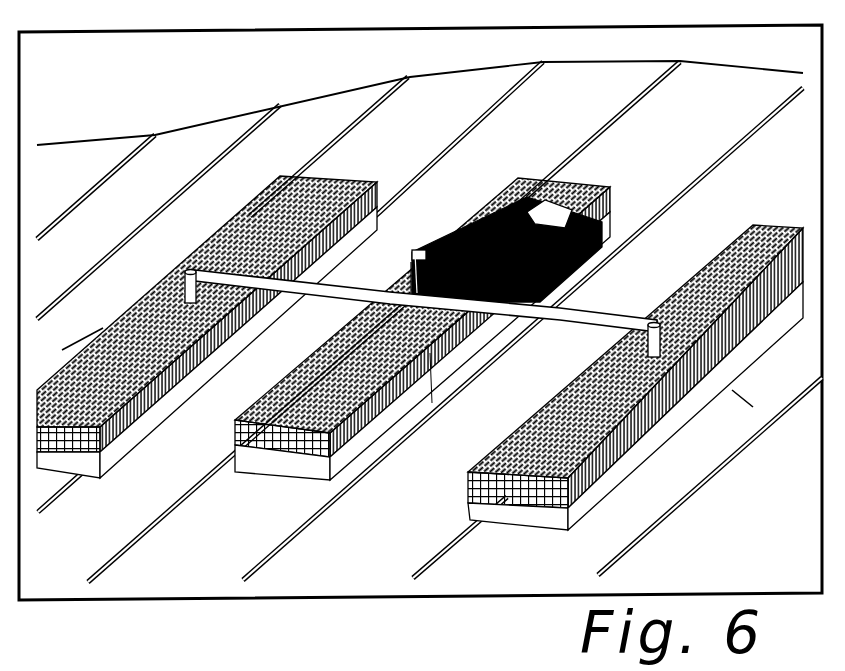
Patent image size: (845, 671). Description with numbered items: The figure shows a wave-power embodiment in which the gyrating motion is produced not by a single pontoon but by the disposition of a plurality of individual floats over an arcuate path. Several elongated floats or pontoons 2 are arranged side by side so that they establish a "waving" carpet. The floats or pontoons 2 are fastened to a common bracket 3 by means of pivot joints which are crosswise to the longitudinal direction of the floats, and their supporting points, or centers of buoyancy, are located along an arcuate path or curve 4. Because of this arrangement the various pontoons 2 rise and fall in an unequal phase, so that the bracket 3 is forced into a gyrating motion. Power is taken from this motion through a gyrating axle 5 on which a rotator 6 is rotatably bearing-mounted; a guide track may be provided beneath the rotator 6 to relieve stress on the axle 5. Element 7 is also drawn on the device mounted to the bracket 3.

The floats or pontoons 2 is at (347, 180).
The bracket 3 is at (343, 296).
The arcuate path 4 is at (362, 270).
The gyrating axle 5 is at (422, 250).
The rotator 6 is at (594, 262).
The component mounted on chip 7 is at (440, 249).